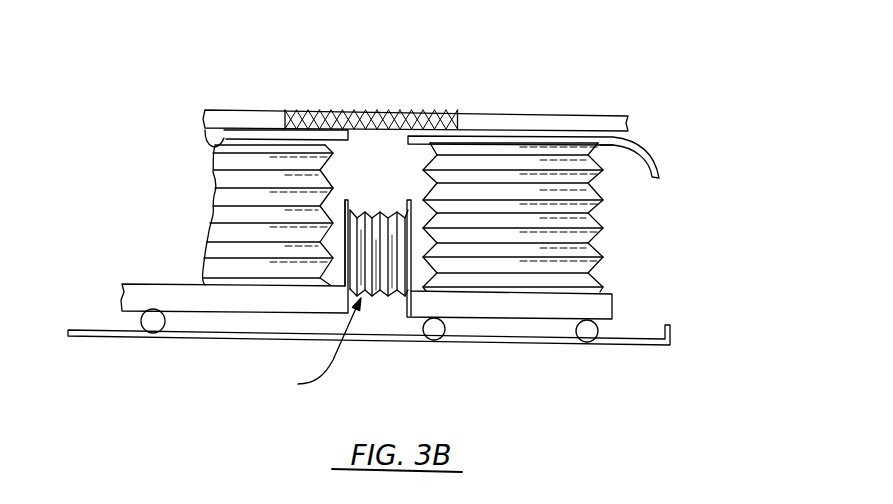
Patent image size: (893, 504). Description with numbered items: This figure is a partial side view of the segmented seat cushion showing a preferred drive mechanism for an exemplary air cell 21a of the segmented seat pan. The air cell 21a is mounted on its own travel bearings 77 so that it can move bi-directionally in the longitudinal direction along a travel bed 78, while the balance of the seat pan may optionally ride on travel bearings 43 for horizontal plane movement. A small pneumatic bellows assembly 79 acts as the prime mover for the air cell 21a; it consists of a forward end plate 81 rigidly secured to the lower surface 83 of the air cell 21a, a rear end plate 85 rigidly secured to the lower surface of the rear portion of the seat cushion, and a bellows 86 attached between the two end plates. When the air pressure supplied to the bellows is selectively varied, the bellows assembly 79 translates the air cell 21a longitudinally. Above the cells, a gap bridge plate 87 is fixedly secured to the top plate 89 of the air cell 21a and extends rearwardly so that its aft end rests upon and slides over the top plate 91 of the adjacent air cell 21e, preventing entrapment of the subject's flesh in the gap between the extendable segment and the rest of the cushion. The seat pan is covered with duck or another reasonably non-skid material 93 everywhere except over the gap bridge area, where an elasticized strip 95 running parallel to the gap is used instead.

The non-skid material 93 is at (233, 110).
The elasticized strip 95 is at (382, 110).
The top plate of cell 21e 91 is at (215, 152).
The gap bridge plate 87 is at (657, 152).
The top plate of air cell 21a 89 is at (613, 144).
The air cell 21e is at (219, 202).
The air cell 21a is at (593, 219).
The rear end plate 85 is at (348, 203).
The forward end plate 81 is at (411, 203).
The bellows 86 is at (388, 300).
The pneumatic bellows assembly 79 is at (315, 346).
The travel bearings 43 is at (153, 322).
The travel bearings 77 is at (583, 330).
The travel bed 78 is at (235, 337).
The lower surface of air cell 21a 83 is at (611, 307).